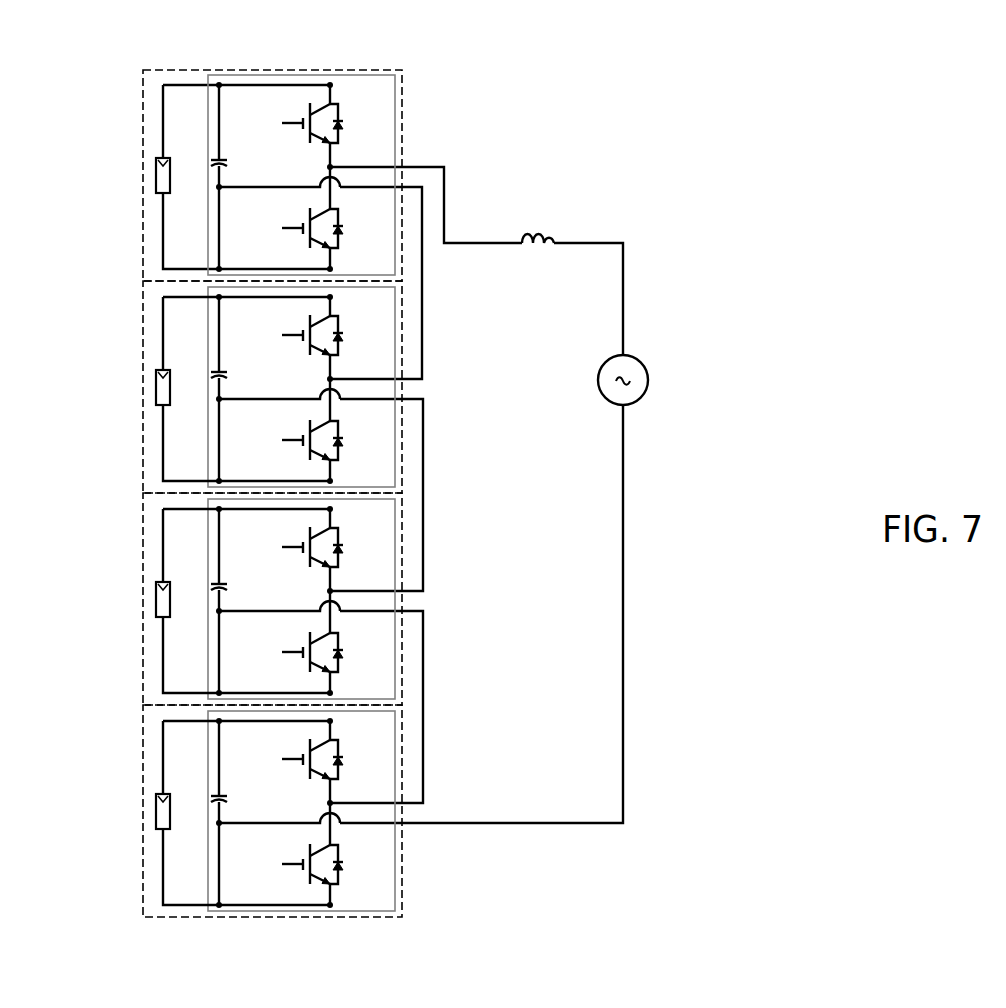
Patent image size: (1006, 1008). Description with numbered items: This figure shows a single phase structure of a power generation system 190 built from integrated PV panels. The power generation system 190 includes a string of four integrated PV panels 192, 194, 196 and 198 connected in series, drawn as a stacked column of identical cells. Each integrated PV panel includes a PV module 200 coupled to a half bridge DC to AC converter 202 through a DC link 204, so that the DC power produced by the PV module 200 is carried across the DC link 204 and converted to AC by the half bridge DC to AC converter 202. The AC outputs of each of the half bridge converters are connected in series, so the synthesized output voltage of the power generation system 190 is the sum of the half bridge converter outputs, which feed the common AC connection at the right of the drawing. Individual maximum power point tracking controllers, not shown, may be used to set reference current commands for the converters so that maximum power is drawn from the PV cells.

The power generation system 190 is at (590, 112).
The integrated PV panel 192 is at (131, 79).
The integrated PV panel 194 is at (131, 291).
The integrated PV panel 196 is at (131, 503).
The integrated PV panel 198 is at (131, 714).
The PV module 200 is at (161, 157).
The half bridge DC to AC converter 202 is at (397, 122).
The DC link 204 is at (222, 159).